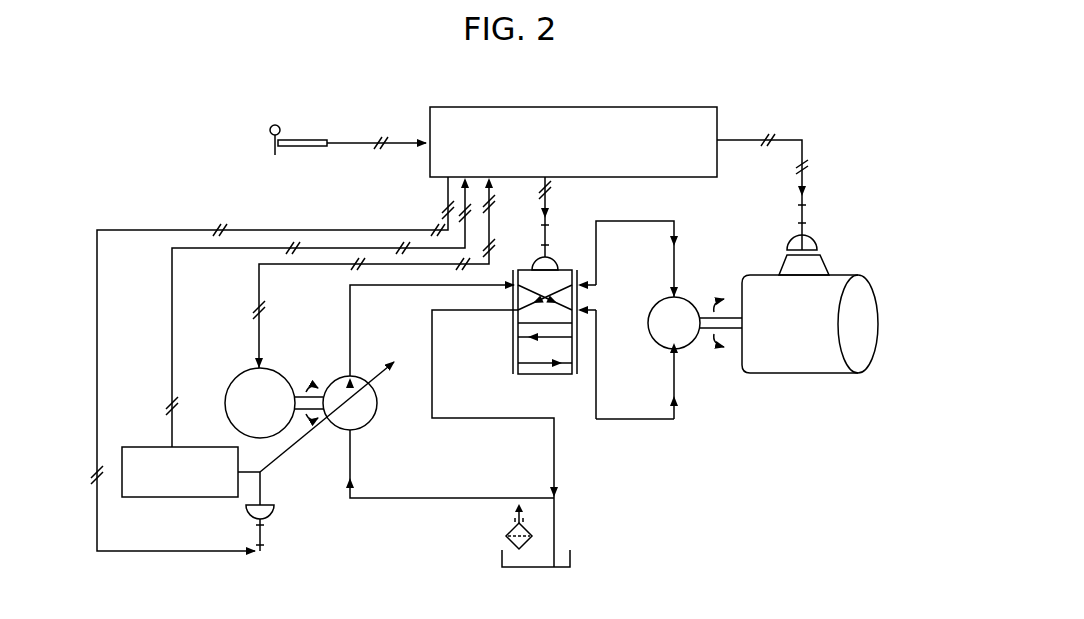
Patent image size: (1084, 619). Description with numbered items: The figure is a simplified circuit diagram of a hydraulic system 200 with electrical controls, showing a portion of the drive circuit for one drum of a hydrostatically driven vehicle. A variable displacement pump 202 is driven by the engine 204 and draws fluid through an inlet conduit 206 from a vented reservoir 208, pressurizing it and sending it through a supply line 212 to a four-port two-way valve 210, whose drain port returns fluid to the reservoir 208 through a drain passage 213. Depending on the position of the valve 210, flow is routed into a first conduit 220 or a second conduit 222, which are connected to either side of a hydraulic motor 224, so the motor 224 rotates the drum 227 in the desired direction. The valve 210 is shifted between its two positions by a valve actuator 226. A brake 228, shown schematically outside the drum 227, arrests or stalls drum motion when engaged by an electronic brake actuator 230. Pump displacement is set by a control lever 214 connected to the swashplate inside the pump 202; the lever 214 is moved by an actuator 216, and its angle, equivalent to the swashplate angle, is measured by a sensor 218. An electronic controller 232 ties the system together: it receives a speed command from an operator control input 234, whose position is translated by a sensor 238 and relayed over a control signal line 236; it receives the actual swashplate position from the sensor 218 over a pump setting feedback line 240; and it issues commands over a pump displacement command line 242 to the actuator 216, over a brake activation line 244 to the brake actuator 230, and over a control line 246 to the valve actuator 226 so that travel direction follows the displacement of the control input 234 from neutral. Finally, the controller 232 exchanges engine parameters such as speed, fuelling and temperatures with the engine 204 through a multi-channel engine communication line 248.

The hydraulic system 200 is at (221, 136).
The variable displacement pump 202 is at (360, 407).
The engine 204 is at (240, 385).
The inlet conduit 206 is at (426, 498).
The reservoir 208 is at (565, 552).
The four-port two-way valve 210 is at (545, 373).
The supply line 212 is at (350, 312).
The drain passage 213 is at (492, 419).
The control lever 214 is at (288, 454).
The actuator 216 is at (266, 512).
The sensor 218 is at (185, 497).
The first conduit 220 is at (620, 221).
The second conduit 222 is at (628, 420).
The hydraulic motor 224 is at (686, 330).
The valve actuator 226 is at (553, 262).
The drum 227 is at (795, 366).
The brake 228 is at (822, 262).
The brake actuator 230 is at (808, 245).
The electronic controller 232 is at (667, 107).
The control input 234 is at (277, 126).
The control signal line 236 is at (391, 142).
The sensor 238 is at (299, 139).
The pump setting feedback line 240 is at (318, 247).
The pump displacement command line 242 is at (262, 229).
The brake activation line 244 is at (785, 139).
The control line 246 is at (538, 202).
The multi-channel engine communication line 248 is at (387, 263).